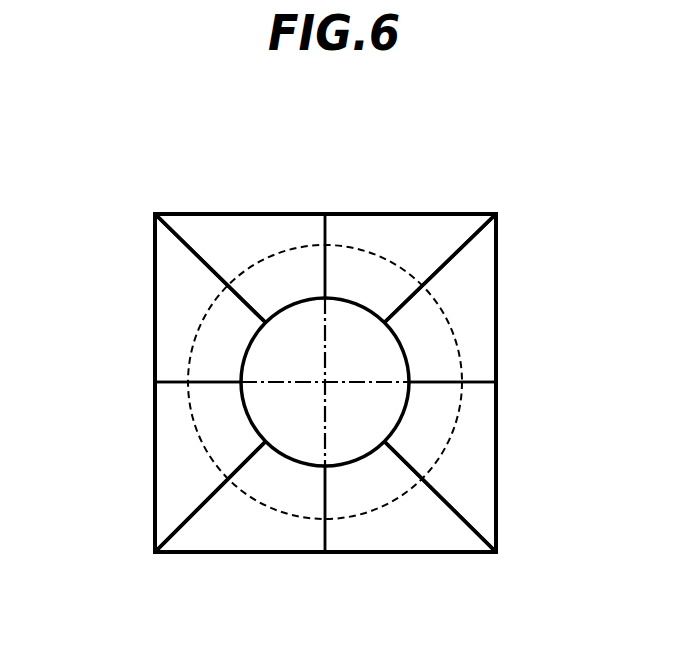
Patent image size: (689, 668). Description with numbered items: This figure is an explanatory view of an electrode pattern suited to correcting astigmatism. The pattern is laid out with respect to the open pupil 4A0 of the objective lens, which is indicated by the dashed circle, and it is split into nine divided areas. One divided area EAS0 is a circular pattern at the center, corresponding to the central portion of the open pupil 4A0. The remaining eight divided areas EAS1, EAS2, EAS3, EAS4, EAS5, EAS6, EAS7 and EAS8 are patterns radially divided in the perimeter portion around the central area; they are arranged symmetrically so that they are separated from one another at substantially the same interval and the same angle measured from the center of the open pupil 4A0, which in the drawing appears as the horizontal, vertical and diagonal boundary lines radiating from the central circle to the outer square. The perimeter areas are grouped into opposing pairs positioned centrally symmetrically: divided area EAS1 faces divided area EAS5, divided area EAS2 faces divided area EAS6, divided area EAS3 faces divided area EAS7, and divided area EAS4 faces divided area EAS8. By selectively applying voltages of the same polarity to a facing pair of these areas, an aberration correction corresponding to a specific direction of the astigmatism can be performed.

The open pupil 4A0 is at (458, 421).
The divided area EAS0 is at (380, 363).
The divided area EAS1 is at (417, 232).
The divided area EAS2 is at (477, 288).
The divided area EAS3 is at (473, 485).
The divided area EAS4 is at (400, 523).
The divided area EAS5 is at (227, 523).
The divided area EAS6 is at (167, 478).
The divided area EAS7 is at (167, 312).
The divided area EAS8 is at (239, 233).